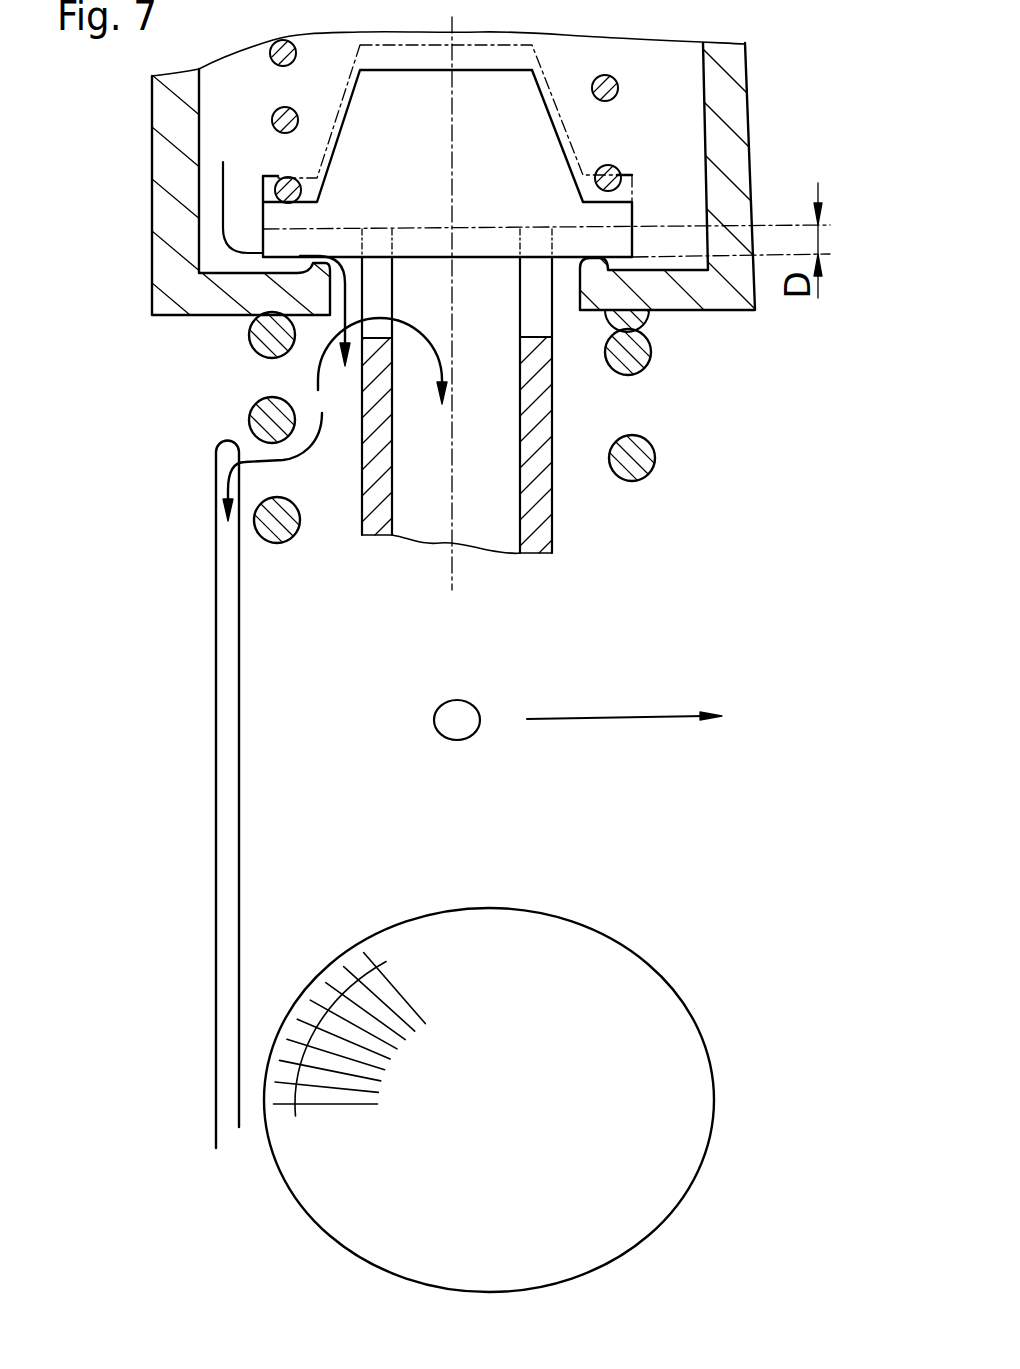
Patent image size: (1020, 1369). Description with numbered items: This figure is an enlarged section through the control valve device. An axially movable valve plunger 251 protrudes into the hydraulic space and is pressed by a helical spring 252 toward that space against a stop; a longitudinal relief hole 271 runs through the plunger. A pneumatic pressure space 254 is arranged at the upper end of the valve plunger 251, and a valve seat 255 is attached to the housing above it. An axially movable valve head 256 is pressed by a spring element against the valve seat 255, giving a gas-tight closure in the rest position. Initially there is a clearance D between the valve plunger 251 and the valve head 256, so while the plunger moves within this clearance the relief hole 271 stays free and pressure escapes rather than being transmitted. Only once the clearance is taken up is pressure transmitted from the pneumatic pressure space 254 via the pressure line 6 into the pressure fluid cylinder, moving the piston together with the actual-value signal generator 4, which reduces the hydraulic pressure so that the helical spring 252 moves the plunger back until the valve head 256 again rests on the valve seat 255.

The actual-value signal generator 4 is at (636, 973).
The pressure line 6 is at (230, 560).
The valve plunger 251 is at (540, 530).
The helical spring 252 is at (635, 462).
The pneumatic pressure space 254 is at (288, 380).
The valve seat 255 is at (590, 260).
The valve head 256 is at (525, 107).
The relief hole 271 is at (498, 415).